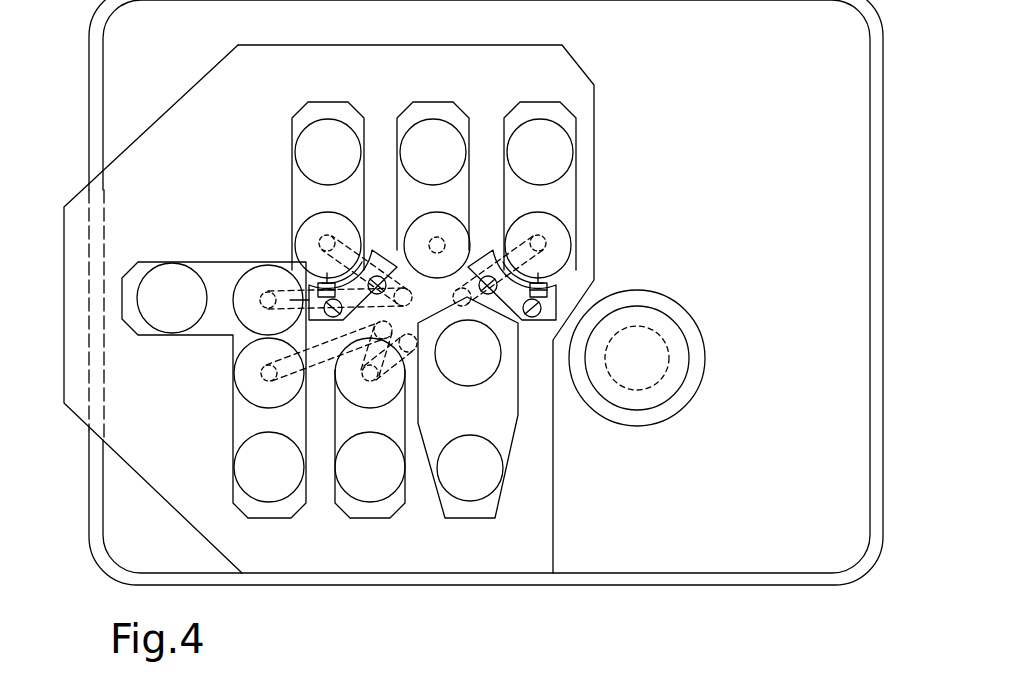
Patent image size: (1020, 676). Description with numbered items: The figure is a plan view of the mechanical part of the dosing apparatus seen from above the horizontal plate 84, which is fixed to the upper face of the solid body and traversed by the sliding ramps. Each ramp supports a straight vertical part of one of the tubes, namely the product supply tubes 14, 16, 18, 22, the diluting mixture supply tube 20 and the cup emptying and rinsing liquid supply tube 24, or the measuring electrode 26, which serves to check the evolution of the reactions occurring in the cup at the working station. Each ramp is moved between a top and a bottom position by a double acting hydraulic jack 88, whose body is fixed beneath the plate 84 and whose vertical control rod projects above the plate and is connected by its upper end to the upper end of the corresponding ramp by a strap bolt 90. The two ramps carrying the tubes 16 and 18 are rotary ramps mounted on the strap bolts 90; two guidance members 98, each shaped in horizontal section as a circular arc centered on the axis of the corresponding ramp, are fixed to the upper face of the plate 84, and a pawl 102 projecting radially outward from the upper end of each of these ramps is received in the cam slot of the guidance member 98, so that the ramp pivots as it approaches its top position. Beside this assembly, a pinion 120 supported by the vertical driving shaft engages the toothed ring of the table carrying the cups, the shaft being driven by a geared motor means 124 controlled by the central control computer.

The horizontal plate 84 is at (73, 207).
The double acting hydraulic jack 88 is at (337, 128).
The strap bolt 90 is at (293, 170).
The product supply tube 16 is at (327, 243).
The product supply tube 18 is at (538, 243).
The diluting mixture supply tube 20 is at (438, 243).
The product supply tube 14 is at (262, 305).
The cup emptying and rinsing liquid supply tube 24 is at (268, 373).
The product supply tube 22 is at (352, 392).
The measuring electrode 26 is at (492, 375).
The guidance member 98 is at (483, 290).
The pawl 102 is at (312, 278).
The pinion 120 is at (680, 405).
The geared motor means 124 is at (660, 335).